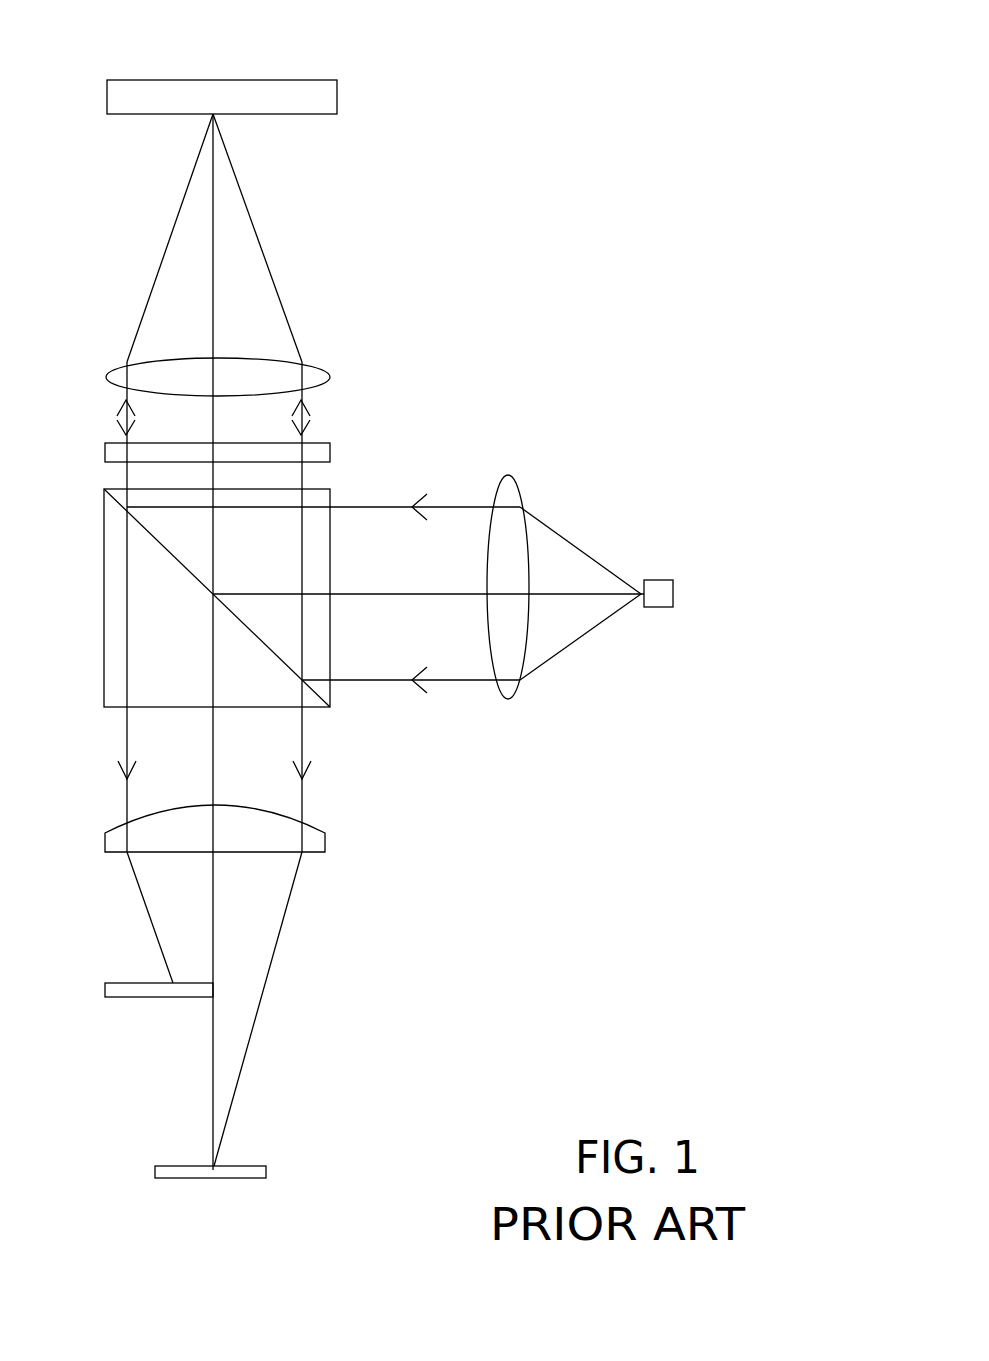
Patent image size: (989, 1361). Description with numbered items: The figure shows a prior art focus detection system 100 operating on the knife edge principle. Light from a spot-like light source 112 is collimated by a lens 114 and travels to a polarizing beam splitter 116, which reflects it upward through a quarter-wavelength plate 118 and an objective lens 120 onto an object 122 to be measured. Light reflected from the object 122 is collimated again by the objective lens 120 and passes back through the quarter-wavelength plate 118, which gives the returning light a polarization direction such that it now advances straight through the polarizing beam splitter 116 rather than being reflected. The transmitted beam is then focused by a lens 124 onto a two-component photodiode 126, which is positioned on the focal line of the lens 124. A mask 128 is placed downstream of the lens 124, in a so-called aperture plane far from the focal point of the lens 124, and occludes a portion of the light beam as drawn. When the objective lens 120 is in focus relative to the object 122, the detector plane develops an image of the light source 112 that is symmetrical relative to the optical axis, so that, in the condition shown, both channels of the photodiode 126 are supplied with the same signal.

The optical system (prior art) 100 is at (653, 349).
The spot-like light source 112 is at (660, 612).
The lens 114 is at (508, 700).
The polarizing beam splitter 116 is at (98, 585).
The quarter-wavelength plate 118 is at (105, 455).
The objective lens 120 is at (325, 368).
The object to be measured 122 is at (107, 97).
The lens 124 is at (107, 840).
The two-component photodiode 126 is at (267, 1165).
The mask 128 is at (103, 988).